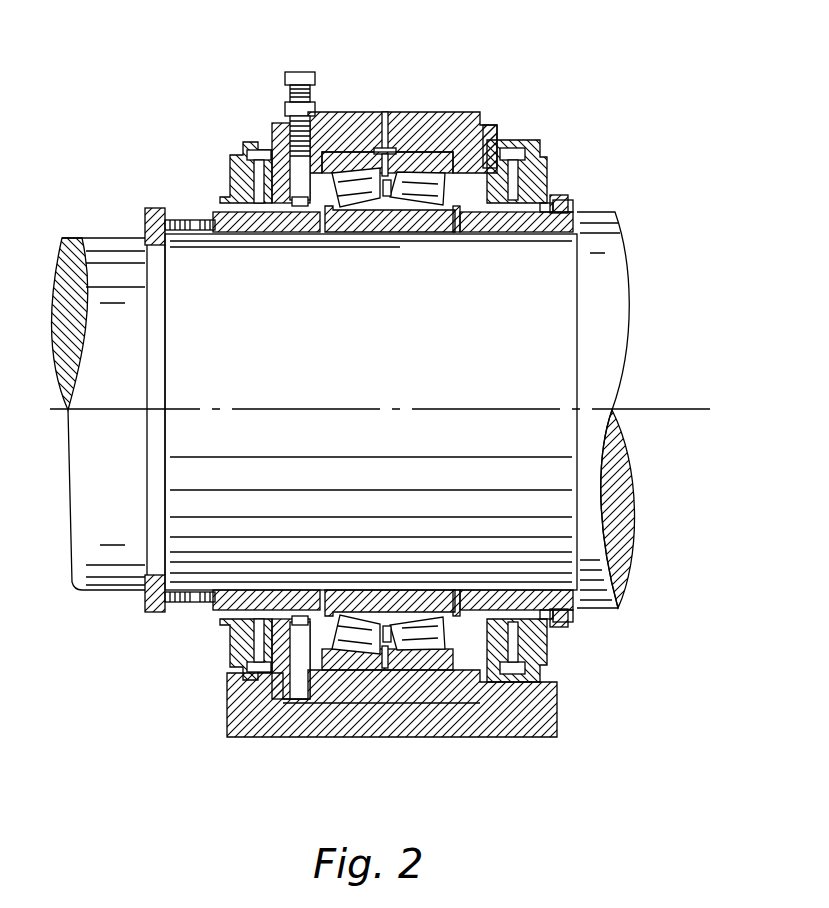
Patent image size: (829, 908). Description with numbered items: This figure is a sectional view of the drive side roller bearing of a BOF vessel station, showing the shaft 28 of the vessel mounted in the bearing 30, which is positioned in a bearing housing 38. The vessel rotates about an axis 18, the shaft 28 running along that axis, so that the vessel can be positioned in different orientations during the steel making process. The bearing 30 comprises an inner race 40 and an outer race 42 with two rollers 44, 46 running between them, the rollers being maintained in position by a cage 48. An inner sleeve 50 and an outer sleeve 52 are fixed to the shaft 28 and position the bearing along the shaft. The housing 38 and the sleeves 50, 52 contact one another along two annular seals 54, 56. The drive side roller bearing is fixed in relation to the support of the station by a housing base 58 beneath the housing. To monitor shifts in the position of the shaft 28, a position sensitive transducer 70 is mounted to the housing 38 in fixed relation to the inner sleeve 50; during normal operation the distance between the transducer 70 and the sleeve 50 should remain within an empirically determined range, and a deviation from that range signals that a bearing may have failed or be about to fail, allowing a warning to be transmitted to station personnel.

The axis 18 is at (672, 412).
The shaft 28 is at (622, 293).
The dual roller bearing 30 is at (379, 72).
The bearing housing 38 is at (418, 112).
The inner race 40 is at (443, 230).
The outer race 42 is at (406, 152).
The roller 44 is at (347, 212).
The roller 46 is at (470, 185).
The cage 48 is at (386, 205).
The inner sleeve 50 is at (248, 232).
The outer sleeve 52 is at (518, 232).
The annular seal 54 is at (240, 233).
The annular seal 56 is at (552, 200).
The housing base 58 is at (415, 737).
The transducer 70 is at (314, 206).